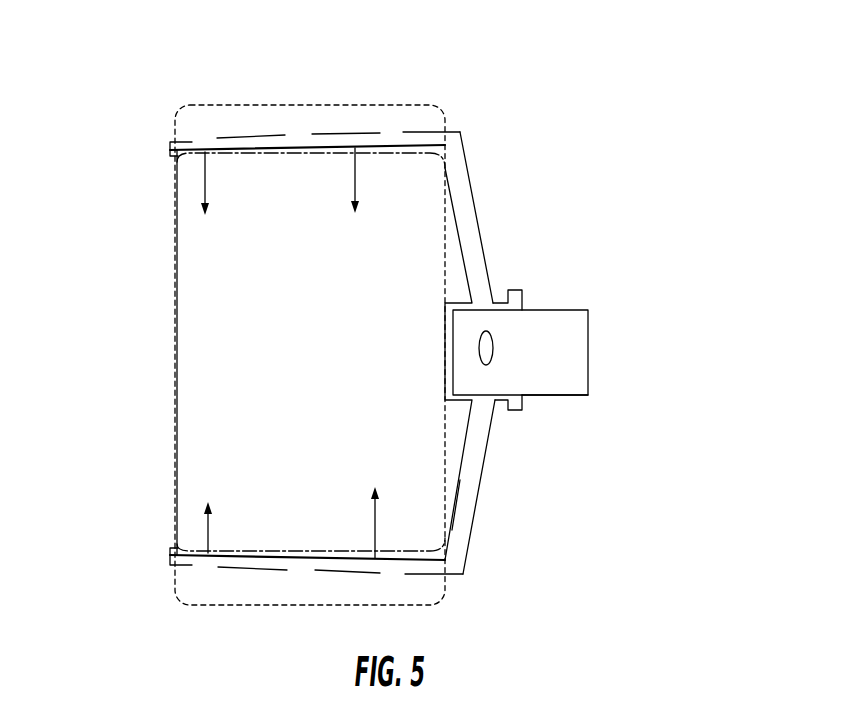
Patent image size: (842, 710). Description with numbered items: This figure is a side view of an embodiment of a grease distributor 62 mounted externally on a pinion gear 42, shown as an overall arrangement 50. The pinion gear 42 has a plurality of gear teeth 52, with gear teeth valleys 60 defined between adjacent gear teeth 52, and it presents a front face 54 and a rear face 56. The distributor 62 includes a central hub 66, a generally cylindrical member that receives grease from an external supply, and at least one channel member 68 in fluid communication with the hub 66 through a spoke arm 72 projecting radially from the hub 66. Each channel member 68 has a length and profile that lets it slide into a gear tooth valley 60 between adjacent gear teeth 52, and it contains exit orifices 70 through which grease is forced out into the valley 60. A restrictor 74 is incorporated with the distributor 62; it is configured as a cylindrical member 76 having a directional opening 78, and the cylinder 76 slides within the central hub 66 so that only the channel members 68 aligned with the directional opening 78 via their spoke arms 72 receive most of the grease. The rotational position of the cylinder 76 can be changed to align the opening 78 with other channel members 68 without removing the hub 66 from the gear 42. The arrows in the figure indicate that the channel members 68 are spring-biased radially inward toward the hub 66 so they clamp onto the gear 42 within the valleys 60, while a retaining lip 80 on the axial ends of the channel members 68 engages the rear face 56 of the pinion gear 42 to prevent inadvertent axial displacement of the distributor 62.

The heat exchanger assembly 50 is at (578, 97).
The gear teeth 52 is at (230, 110).
The pinion gear 42 is at (172, 233).
The rear face 56 is at (177, 340).
The channel member 68 is at (308, 146).
The gear teeth valleys 60 is at (310, 127).
The exit orifices 70 is at (388, 130).
The retaining lip 80 is at (170, 150).
The spoke arm 72 is at (485, 252).
The grease distributor 62 is at (513, 565).
The central hub 66 is at (498, 298).
The restrictor 74 is at (550, 330).
The cylindrical member 76 is at (568, 397).
The directional opening 78 is at (479, 352).
The front face 54 is at (445, 453).